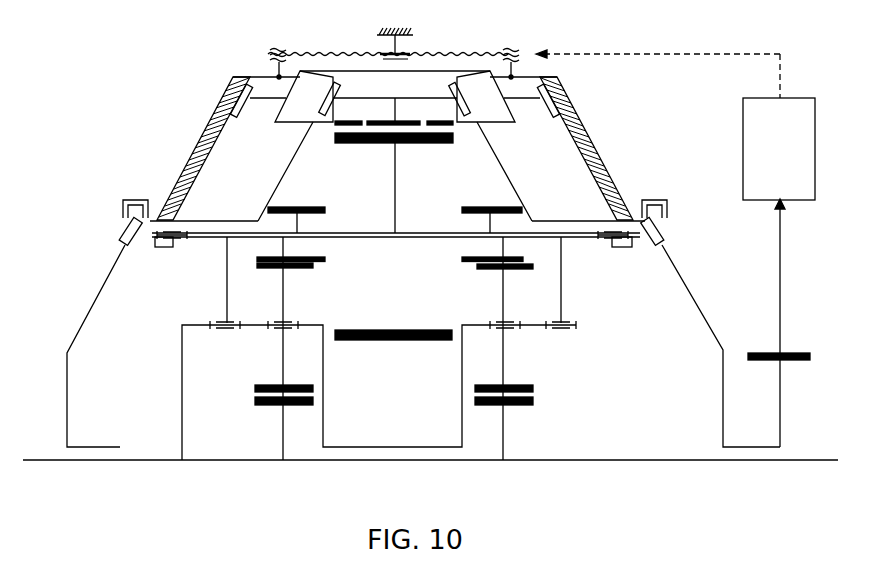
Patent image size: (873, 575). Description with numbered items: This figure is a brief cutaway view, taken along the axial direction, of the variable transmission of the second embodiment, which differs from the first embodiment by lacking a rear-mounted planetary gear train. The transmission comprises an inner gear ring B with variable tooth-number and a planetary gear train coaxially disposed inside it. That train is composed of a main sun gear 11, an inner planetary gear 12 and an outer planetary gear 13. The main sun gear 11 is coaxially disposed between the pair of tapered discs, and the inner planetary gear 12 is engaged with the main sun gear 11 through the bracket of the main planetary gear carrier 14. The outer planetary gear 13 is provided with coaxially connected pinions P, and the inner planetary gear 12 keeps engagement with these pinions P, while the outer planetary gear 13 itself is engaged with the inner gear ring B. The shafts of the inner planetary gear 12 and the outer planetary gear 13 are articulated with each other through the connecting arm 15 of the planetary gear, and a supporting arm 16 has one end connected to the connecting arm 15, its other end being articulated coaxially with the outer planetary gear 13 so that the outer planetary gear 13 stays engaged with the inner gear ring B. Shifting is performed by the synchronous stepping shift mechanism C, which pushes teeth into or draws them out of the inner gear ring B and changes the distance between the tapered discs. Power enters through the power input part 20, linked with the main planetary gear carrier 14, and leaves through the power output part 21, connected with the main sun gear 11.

The main sun gear 11 is at (268, 408).
The inner planetary gear 12 is at (490, 272).
The outer planetary gear 13 is at (420, 144).
The main planetary gear carrier 14 is at (182, 402).
The connecting arm of the planetary gear 15 is at (224, 284).
The supporting arm 16 is at (577, 238).
The power input part 20 is at (55, 460).
The power output part 21 is at (797, 460).
The inner gear ring B is at (452, 128).
The synchronous stepping shift mechanism C is at (742, 130).
The pinions P is at (477, 214).